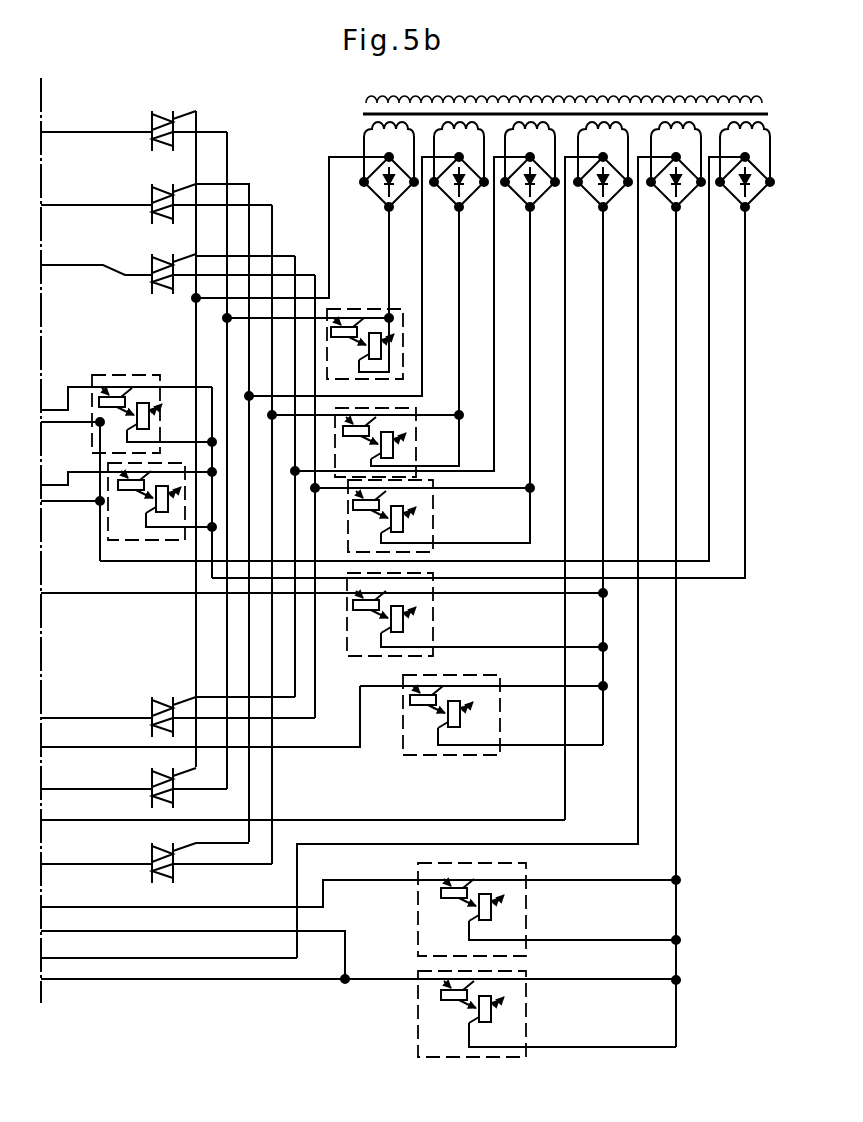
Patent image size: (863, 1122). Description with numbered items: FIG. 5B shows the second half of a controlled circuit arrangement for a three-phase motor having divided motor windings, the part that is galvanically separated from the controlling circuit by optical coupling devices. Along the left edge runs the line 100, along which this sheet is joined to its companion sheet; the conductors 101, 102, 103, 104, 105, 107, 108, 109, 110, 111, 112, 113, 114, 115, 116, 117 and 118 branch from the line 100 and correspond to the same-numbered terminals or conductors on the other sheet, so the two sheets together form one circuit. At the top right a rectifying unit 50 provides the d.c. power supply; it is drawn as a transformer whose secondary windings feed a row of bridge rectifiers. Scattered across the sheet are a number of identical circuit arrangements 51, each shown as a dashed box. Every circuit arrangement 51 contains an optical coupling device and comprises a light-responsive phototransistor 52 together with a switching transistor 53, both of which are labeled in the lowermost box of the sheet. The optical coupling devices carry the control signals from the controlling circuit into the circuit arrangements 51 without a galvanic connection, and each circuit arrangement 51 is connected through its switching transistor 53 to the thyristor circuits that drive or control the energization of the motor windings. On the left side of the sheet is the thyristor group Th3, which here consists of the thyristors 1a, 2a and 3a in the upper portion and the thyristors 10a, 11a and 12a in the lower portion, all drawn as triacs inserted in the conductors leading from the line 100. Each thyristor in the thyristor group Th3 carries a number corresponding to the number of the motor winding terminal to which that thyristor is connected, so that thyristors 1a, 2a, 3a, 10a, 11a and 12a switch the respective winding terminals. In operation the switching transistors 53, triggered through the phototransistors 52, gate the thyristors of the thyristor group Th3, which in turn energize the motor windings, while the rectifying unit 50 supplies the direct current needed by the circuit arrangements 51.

The line 100 is at (42, 526).
The conductor 101 is at (76, 130).
The conductor 102 is at (76, 203).
The conductor 103 is at (79, 263).
The conductor 104 is at (53, 408).
The conductor 105 is at (73, 420).
The conductor 107 is at (53, 482).
The conductor 108 is at (63, 503).
The conductor 109 is at (77, 596).
The conductor 110 is at (57, 716).
The conductor 111 is at (98, 745).
The conductor 112 is at (65, 788).
The conductor 113 is at (98, 818).
The conductor 114 is at (60, 863).
The conductor 115 is at (100, 905).
The conductor 116 is at (69, 931).
The conductor 117 is at (113, 958).
The conductor 118 is at (198, 979).
The rectifying unit 50 is at (666, 76).
The circuit arrangement 51 is at (384, 705).
The phototransistor 52 is at (493, 1030).
The switching transistor 53 is at (453, 1001).
The thyristor 1a is at (172, 118).
The thyristor 2a is at (199, 193).
The thyristor 3a is at (222, 263).
The thyristor 10a is at (222, 703).
The thyristor 11a is at (172, 780).
The thyristor 12a is at (199, 855).
The thyristor group Th3 is at (163, 73).